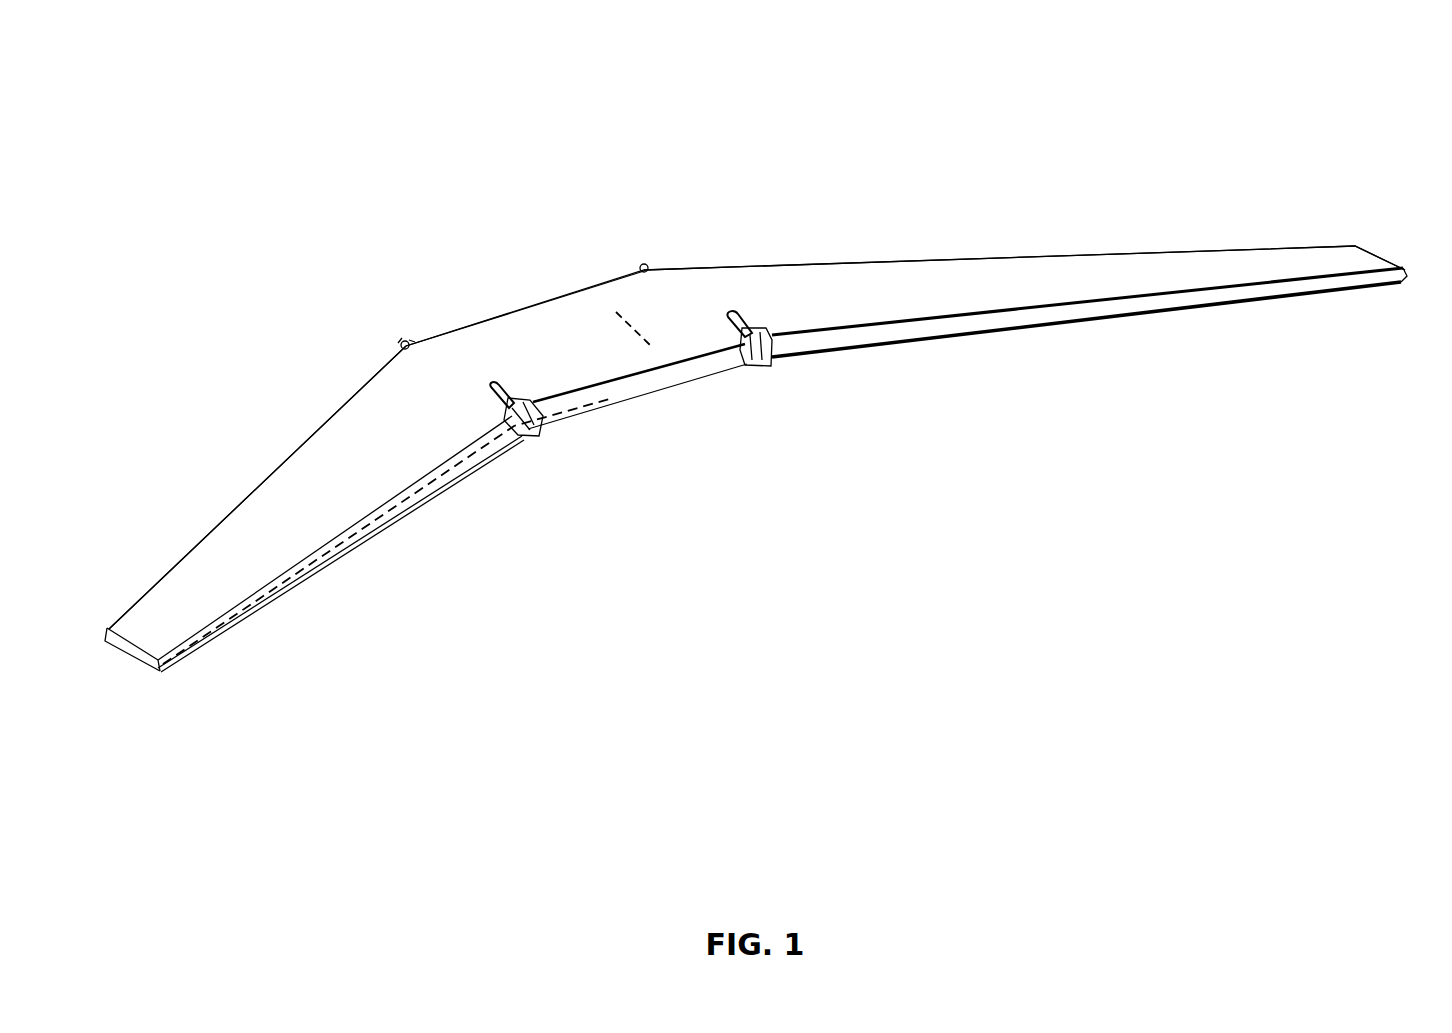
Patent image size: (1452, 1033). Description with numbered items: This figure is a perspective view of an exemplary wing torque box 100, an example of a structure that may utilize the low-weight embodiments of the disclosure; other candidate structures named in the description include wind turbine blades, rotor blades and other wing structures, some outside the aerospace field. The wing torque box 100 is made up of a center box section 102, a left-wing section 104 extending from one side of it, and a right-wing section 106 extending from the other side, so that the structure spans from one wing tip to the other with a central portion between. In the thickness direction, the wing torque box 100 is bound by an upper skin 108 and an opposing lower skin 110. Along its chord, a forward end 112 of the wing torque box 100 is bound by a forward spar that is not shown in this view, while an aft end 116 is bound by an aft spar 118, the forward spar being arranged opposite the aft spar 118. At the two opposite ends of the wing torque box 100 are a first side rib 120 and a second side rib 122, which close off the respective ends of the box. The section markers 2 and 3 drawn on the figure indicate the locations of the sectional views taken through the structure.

The wing torque box 100 is at (280, 181).
The center box section 102 is at (522, 332).
The left-wing section 104 is at (299, 628).
The right-wing section 106 is at (1078, 352).
The upper skin 108 is at (1000, 284).
The lower skin 110 is at (778, 369).
The forward end 112 is at (262, 332).
The aft end 116 is at (667, 558).
The aft spar 118 is at (650, 380).
The first side rib 120 is at (132, 665).
The second side rib 122 is at (1404, 281).
The section line 2- 2 is at (616, 312).
The section line 3- 3 is at (155, 664).